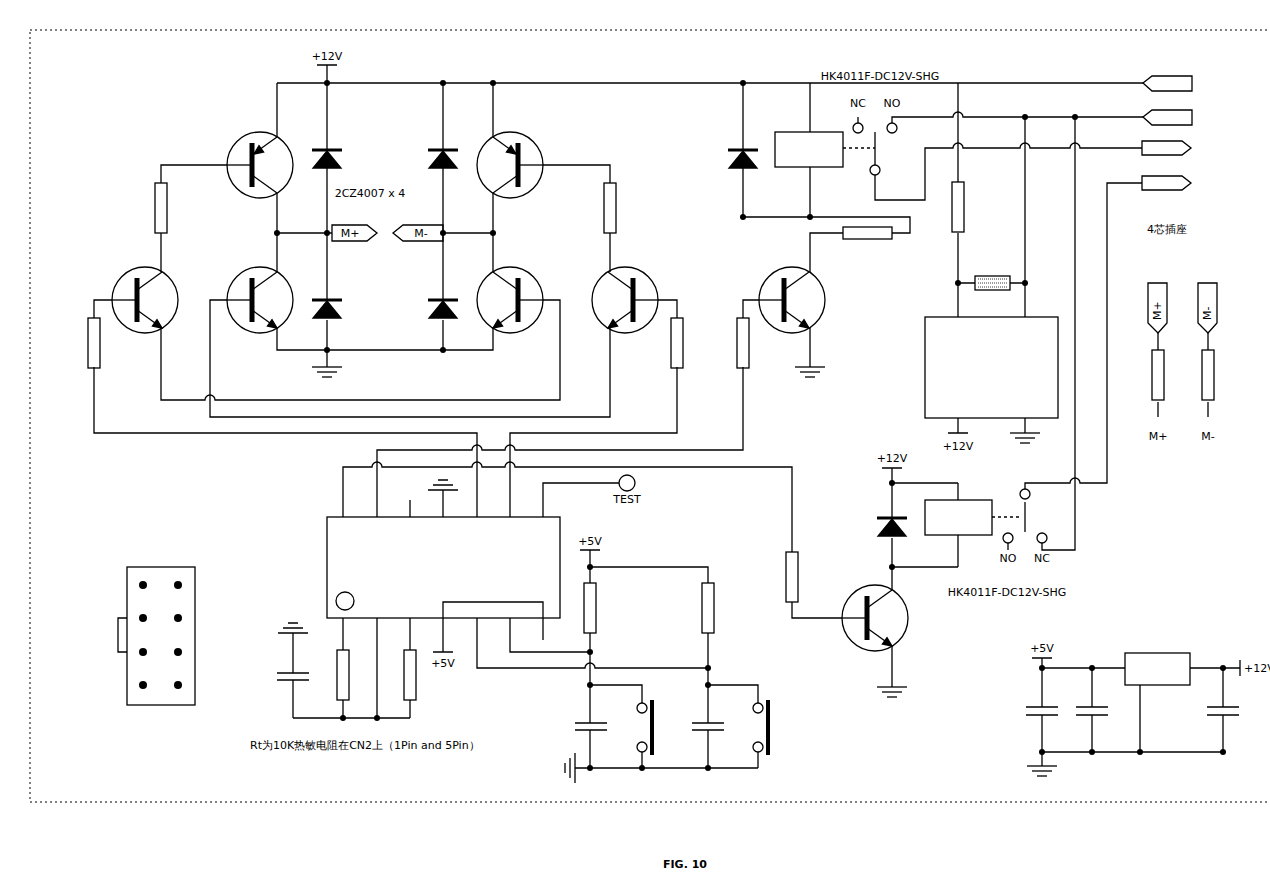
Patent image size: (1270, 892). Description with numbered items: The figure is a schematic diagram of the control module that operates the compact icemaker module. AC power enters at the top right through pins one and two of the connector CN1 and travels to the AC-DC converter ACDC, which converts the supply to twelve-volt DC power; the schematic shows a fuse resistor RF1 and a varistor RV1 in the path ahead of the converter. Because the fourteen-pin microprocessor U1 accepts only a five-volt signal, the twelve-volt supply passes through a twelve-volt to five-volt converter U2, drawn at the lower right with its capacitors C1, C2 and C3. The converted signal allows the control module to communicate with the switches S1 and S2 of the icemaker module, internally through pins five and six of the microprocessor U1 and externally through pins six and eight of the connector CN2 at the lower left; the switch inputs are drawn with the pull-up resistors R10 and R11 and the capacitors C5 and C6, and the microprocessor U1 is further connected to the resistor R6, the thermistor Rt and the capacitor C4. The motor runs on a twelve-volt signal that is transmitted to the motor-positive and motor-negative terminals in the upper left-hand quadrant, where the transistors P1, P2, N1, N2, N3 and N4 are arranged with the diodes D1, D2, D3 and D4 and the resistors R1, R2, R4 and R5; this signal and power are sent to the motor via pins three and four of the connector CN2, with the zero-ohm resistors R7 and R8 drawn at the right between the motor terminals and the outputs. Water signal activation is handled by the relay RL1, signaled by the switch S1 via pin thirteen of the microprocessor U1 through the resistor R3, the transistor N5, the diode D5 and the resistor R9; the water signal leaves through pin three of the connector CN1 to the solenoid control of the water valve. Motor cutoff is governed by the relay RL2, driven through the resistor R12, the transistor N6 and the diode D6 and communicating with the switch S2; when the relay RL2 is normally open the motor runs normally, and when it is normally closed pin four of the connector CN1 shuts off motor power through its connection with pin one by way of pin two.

The PNP transistor M8550 P1 is at (260, 173).
The PNP transistor M8550 P2 is at (513, 173).
The NPN transistor M8050 N1 is at (260, 308).
The NPN transistor M8050 N2 is at (513, 308).
The NPN transistor M8050 N3 is at (145, 293).
The NPN transistor M8050 N4 is at (629, 293).
The NPN transistor M8050 N5 is at (814, 300).
The NPN transistor M8050 N6 is at (898, 618).
The diode 2CZ4007 D1 is at (339, 300).
The diode 2CZ4007 D2 is at (430, 300).
The diode 2CZ4007 D3 is at (339, 152).
The diode 2CZ4007 D4 is at (430, 152).
The diode 2CZ4007 D5 is at (729, 167).
The diode 2CZ4007 D6 is at (867, 518).
The resistor 2K R1 is at (84, 343).
The resistor 2K R2 is at (687, 343).
The resistor 2K R3 is at (753, 343).
The resistor 2K R4 is at (170, 208).
The resistor 2K R5 is at (619, 208).
The resistor 10K R6 is at (355, 675).
The resistor 0 ohm R7 is at (1166, 375).
The resistor 0 ohm R8 is at (1216, 375).
The resistor 0 ohm R9 is at (867, 243).
The resistor 10K R10 is at (602, 608).
The resistor 10K R11 is at (720, 608).
The resistor 2K R12 is at (804, 577).
The 10K thermistor Rt is at (422, 675).
The fuse resistor 10ohm 2W RF1 is at (978, 207).
The varistor V275 RV1 is at (1018, 275).
The relay RL1 is at (809, 149).
The relay RL2 is at (958, 517).
The controller IC SOP14 U1 is at (443, 569).
The voltage regulator LM1117-5.0 U2 is at (1158, 661).
The connector CN1 is at (1167, 121).
The connector CN2 is at (160, 628).
The capacitor 2.2uF C1 is at (1238, 716).
The capacitor 2.2uF C2 is at (1108, 716).
The capacitor 104 C3 is at (1053, 716).
The capacitor 104 C4 is at (305, 684).
The capacitor 104 C5 is at (603, 734).
The capacitor 104 C6 is at (720, 734).
The switch S1 is at (657, 729).
The switch S2 is at (773, 729).
The AC-DC power module 12V/5W ACDC is at (991, 367).